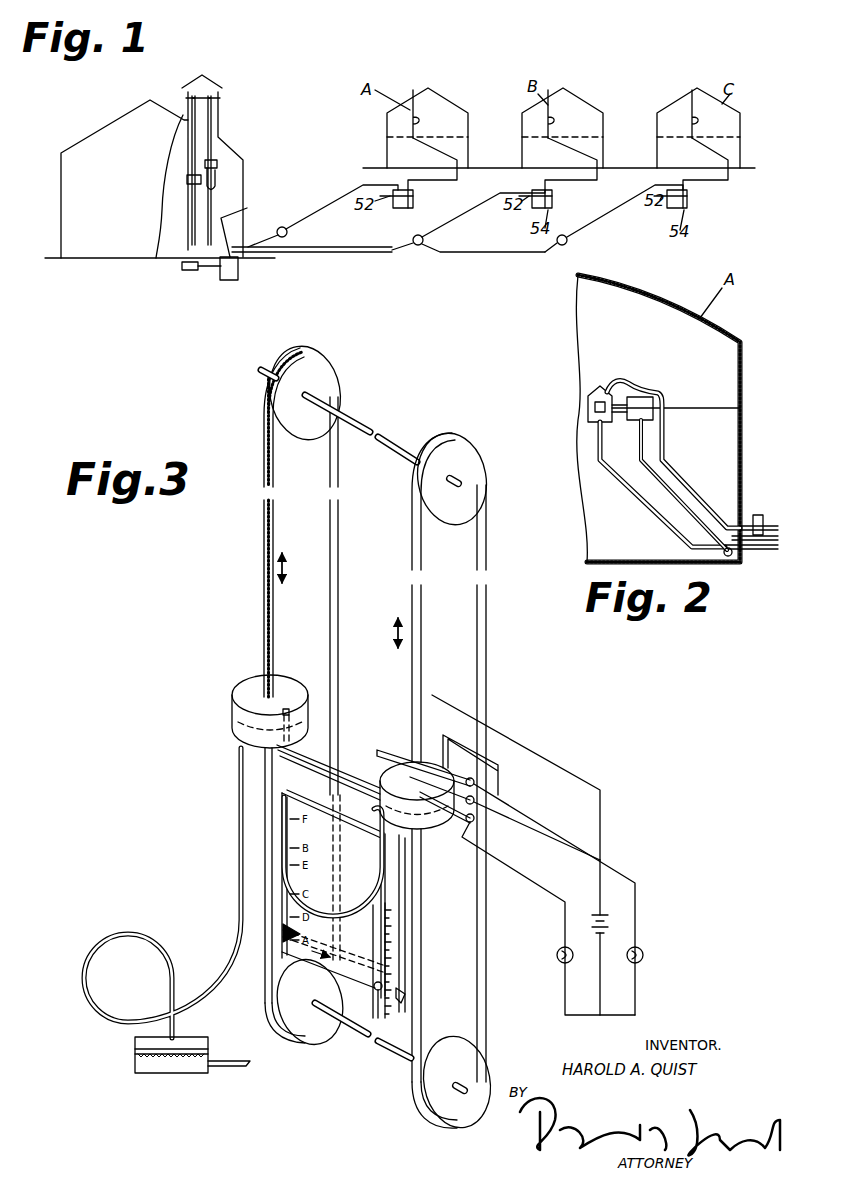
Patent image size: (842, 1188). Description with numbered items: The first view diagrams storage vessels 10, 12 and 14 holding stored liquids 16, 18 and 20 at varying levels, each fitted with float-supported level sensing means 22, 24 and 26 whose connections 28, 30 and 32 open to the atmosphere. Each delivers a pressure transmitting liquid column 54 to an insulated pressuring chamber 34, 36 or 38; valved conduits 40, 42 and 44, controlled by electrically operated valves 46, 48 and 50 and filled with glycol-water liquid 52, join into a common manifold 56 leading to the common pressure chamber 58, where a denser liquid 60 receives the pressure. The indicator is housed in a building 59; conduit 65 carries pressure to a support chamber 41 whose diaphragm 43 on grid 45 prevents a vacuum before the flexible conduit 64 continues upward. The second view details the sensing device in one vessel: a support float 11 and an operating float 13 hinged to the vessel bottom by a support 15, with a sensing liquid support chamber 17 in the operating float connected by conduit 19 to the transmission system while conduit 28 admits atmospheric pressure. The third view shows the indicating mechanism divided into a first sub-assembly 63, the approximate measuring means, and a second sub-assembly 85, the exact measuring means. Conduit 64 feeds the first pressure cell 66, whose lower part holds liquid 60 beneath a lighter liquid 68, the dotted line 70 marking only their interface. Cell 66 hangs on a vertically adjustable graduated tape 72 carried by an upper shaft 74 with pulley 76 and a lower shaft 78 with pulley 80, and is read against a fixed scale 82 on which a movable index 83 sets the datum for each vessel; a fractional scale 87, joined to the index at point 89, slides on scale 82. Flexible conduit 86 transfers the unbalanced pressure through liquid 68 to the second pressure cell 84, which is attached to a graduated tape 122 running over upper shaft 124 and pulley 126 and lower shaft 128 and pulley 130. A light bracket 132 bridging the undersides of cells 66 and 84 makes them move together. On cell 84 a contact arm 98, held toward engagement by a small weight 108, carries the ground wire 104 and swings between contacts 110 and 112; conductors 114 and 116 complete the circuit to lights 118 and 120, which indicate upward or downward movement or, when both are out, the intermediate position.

In FIG. 1, the storage vessel 10 is at (470, 112).
In FIG. 2, the support float 11 is at (641, 397).
In FIG. 1, the storage vessel 12 is at (610, 112).
In FIG. 2, the operating float 13 is at (605, 388).
In FIG. 1, the storage vessel 14 is at (745, 108).
In FIG. 2, the support 15 is at (685, 522).
In FIG. 1, the stored liquid 16 is at (393, 150).
In FIG. 2, the stored liquid 16 is at (712, 397).
In FIG. 2, the sensing liquid support chamber 17 is at (598, 424).
In FIG. 1, the stored liquid 18 is at (535, 151).
In FIG. 2, the conduit 19 is at (645, 500).
In FIG. 1, the stored liquid 20 is at (668, 149).
In FIG. 1, the liquid level sensing means 22 is at (445, 150).
In FIG. 2, the liquid level sensing means 22 is at (590, 392).
In FIG. 1, the liquid level sensing means 24 is at (598, 148).
In FIG. 1, the liquid level sensing means 26 is at (738, 148).
In FIG. 1, the atmospheric connection conduit 28 is at (410, 114).
In FIG. 2, the atmospheric connection conduit 28 is at (688, 482).
In FIG. 1, the atmospheric connection 30 is at (545, 119).
In FIG. 1, the atmospheric connection 32 is at (688, 120).
In FIG. 1, the pressuring chamber 34 is at (413, 208).
In FIG. 1, the pressuring chamber 36 is at (553, 203).
In FIG. 1, the pressuring chamber 38 is at (690, 200).
In FIG. 1, the valved conduit 40 is at (340, 198).
In FIG. 1, the support chamber 41 is at (180, 266).
In FIG. 3, the support chamber 41 is at (132, 1057).
In FIG. 1, the valved conduit 42 is at (469, 210).
In FIG. 3, the diaphragm 43 is at (150, 1047).
In FIG. 1, the valved conduit 44 is at (608, 214).
In FIG. 3, the grid 45 is at (156, 1058).
In FIG. 1, the valve 46 is at (288, 233).
In FIG. 1, the valve 48 is at (424, 239).
In FIG. 1, the valve 50 is at (568, 241).
In FIG. 1, the transmitting liquid 52 is at (212, 267).
In FIG. 1, the pressure transmitting liquid column 54 is at (398, 210).
In FIG. 1, the common manifold 56 is at (306, 228).
In FIG. 1, the common pressure chamber 58 is at (239, 276).
In FIG. 1, the building 59 is at (70, 203).
In FIG. 1, the dense liquid 60 is at (228, 285).
In FIG. 3, the dense liquid 60 is at (232, 735).
In FIG. 1, the first sub-assembly 63 is at (188, 170).
In FIG. 3, the first sub-assembly 63 is at (262, 565).
In FIG. 1, the flexible pressure transmitting conduit 64 is at (190, 244).
In FIG. 3, the flexible pressure transmitting conduit 64 is at (238, 907).
In FIG. 3, the conduit 65 is at (235, 1068).
In FIG. 3, the first pressure cell 66 is at (233, 709).
In FIG. 3, the second liquid 68 is at (252, 717).
In FIG. 3, the liquid face 70 is at (307, 700).
In FIG. 3, the graduated tape 72 is at (275, 517).
In FIG. 3, the upper shaft 74 is at (358, 417).
In FIG. 3, the pulley 76 is at (323, 366).
In FIG. 3, the lower shaft 78 is at (345, 1022).
In FIG. 3, the pulley 80 is at (295, 1010).
In FIG. 3, the fixed scale 82 is at (296, 814).
In FIG. 3, the movable index 83 is at (283, 929).
In FIG. 3, the second pressure cell 84 is at (428, 829).
In FIG. 1, the second sub-assembly 85 is at (219, 185).
In FIG. 3, the second sub-assembly 85 is at (490, 618).
In FIG. 3, the flexible conduit 86 is at (365, 917).
In FIG. 3, the fractional scale 87 is at (367, 830).
In FIG. 3, the connection point 89 is at (380, 1002).
In FIG. 3, the contact arm 98 is at (473, 780).
In FIG. 3, the ground wire 104 is at (600, 965).
In FIG. 3, the weight 108 is at (380, 748).
In FIG. 3, the contact 110 is at (506, 808).
In FIG. 3, the contact 112 is at (495, 760).
In FIG. 3, the conductor 114 is at (534, 888).
In FIG. 3, the conductor 116 is at (553, 840).
In FIG. 3, the light 118 is at (557, 955).
In FIG. 3, the light 120 is at (643, 954).
In FIG. 3, the graduated tape 122 is at (422, 670).
In FIG. 3, the upper shaft 124 is at (408, 450).
In FIG. 3, the pulley 126 is at (470, 470).
In FIG. 3, the lower shaft 128 is at (408, 1064).
In FIG. 3, the pulley 130 is at (487, 1080).
In FIG. 3, the bracket 132 is at (320, 742).